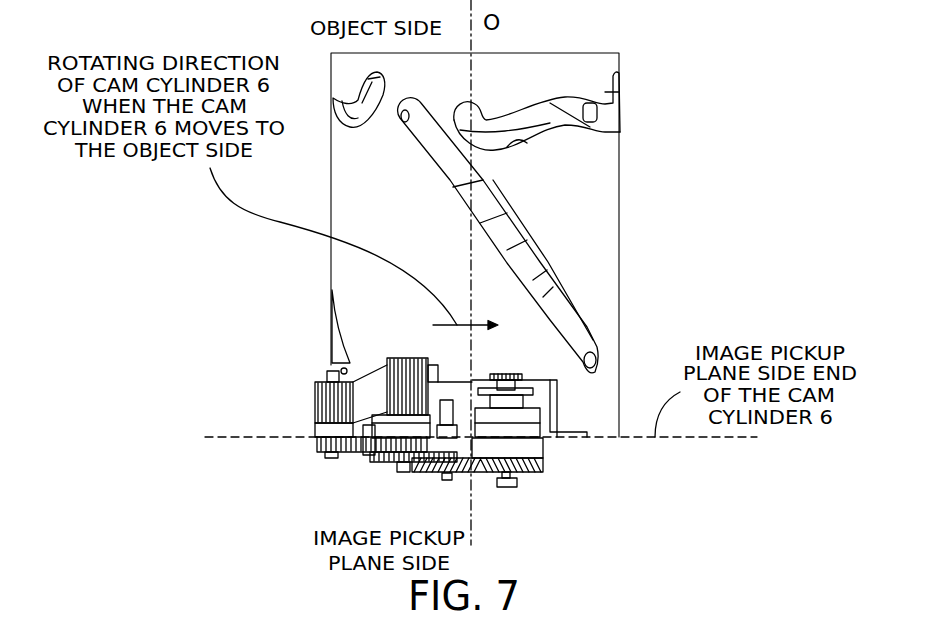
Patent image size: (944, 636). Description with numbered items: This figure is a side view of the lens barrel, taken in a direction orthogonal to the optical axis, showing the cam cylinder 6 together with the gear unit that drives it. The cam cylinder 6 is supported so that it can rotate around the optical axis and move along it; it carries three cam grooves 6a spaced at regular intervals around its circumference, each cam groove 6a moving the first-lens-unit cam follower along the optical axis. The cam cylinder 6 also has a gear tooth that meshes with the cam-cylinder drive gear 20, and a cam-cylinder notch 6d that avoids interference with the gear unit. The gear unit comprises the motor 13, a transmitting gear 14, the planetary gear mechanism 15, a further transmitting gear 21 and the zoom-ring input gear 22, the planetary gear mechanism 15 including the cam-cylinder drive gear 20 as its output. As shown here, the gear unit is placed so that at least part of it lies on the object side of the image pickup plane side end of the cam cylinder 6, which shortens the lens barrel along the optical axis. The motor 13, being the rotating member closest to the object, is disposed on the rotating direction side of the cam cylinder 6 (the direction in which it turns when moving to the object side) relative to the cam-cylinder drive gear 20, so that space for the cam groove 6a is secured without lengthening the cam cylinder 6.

The cam cylinder 6 is at (602, 210).
The cam groove 6a is at (430, 155).
The cam-cylinder notch 6d is at (555, 397).
The motor 13 is at (545, 447).
The transmitting gear 14 is at (450, 473).
The planetary gear mechanism 15 is at (402, 423).
The cam-cylinder drive gear 20 is at (392, 382).
The transmitting gear 21 is at (365, 455).
The zoom-ring input gear 22 is at (325, 423).